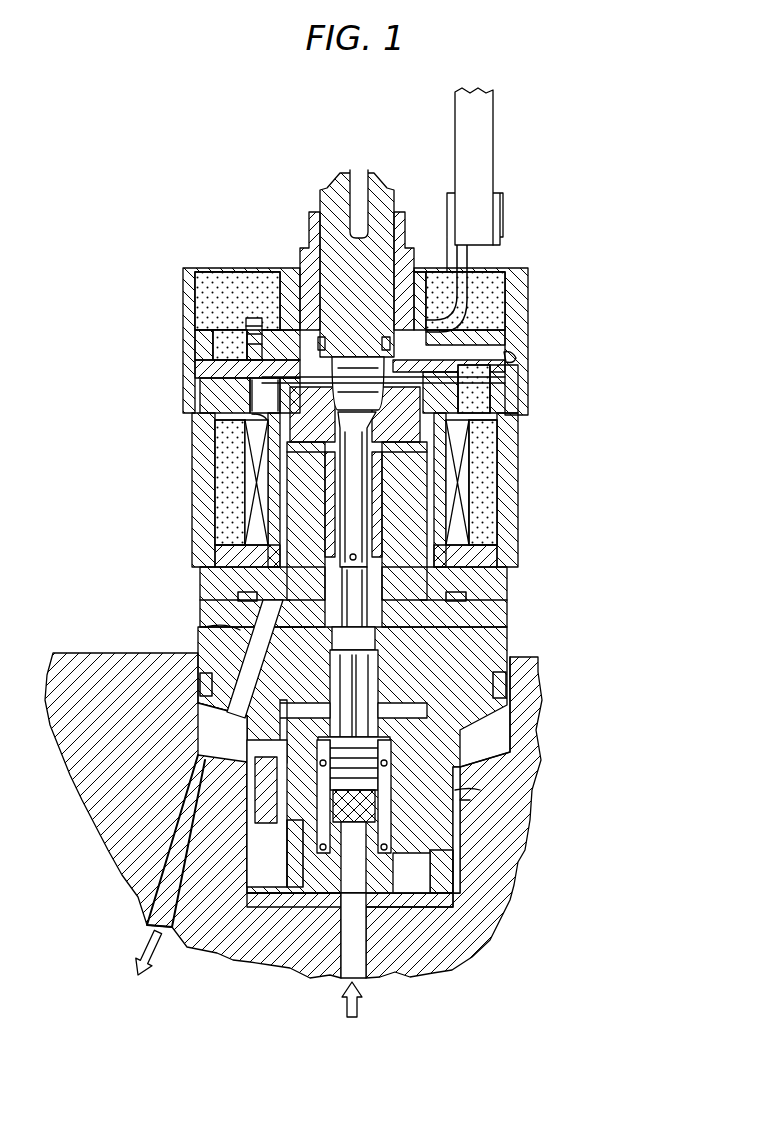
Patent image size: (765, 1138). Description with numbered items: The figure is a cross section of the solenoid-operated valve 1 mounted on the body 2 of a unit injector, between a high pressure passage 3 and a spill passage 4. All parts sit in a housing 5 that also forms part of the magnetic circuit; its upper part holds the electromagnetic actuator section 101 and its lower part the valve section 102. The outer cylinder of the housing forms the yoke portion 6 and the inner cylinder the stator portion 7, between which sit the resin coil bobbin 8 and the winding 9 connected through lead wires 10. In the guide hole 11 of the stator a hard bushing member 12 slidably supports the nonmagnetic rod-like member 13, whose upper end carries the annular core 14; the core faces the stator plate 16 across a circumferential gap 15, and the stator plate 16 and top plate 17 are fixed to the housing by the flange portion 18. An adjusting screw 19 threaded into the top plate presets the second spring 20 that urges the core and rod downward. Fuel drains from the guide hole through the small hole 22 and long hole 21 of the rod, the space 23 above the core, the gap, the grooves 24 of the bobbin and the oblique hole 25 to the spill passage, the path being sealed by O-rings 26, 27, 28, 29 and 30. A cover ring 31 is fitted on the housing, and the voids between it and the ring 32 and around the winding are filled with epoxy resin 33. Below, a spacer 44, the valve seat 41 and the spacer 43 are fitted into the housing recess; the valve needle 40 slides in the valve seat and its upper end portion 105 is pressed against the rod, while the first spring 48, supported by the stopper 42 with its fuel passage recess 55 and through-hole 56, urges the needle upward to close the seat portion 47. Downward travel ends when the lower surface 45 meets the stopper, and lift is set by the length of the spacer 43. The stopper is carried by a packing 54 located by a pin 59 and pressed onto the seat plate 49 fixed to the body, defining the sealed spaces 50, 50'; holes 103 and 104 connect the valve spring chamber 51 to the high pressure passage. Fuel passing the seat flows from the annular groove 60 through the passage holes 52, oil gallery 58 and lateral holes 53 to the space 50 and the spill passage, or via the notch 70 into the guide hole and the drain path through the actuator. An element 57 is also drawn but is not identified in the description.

The solenoid-operated valve 1 is at (178, 250).
The body 2 is at (490, 918).
The high pressure passage 3 is at (368, 975).
The spill passage 4 is at (162, 906).
The housing 5 is at (485, 608).
The yoke portion 6 is at (512, 484).
The stator portion 7 is at (300, 526).
The coil bobbin 8 is at (476, 580).
The winding 9 is at (455, 456).
The lead wires 10 is at (484, 152).
The guide hole 11 is at (236, 585).
The bushing member 12 is at (410, 512).
The rod-like member 13 is at (440, 631).
The core 14 is at (500, 422).
The circumferential space 15 is at (206, 433).
The stator plate 16 is at (215, 398).
The top plate 17 is at (200, 370).
The flange portion 18 is at (197, 340).
The adjusting screw 19 is at (327, 196).
The compression spring 20 is at (528, 328).
The long hole 21 is at (262, 495).
The small hole 22 is at (235, 548).
The space 23 is at (508, 360).
The grooves 24 is at (225, 470).
The oblique hole 25 is at (222, 625).
The O-ring 26 is at (255, 300).
The O-ring 27 is at (490, 380).
The O-ring 28 is at (500, 407).
The O-ring 29 is at (470, 592).
The O-ring 30 is at (538, 690).
The cover ring 31 is at (183, 290).
The ring 32 is at (292, 280).
The epoxy resin 33 is at (503, 268).
The valve needle 40 is at (458, 750).
The valve seat 41 is at (538, 713).
The stopper 42 is at (440, 820).
The spacer 43 is at (420, 862).
The spacer 44 is at (510, 645).
The lower surface 45 is at (230, 800).
The seat portion 47 is at (470, 724).
The compression valve spring 48 is at (430, 846).
The annular seat plate 49 is at (270, 935).
The space 50 is at (115, 735).
The space 50' is at (503, 897).
The valve spring chamber 51 is at (468, 801).
The passage holes 52 is at (200, 660).
The lateral holes 53 is at (190, 775).
The packing 54 is at (447, 968).
The fuel passage recess 55 is at (290, 905).
The through-hole 56 is at (230, 826).
The passage 57 is at (470, 790).
The oil gallery 58 is at (248, 735).
The pin 59 is at (240, 955).
The annular groove 60 is at (205, 645).
The notch 70 is at (538, 668).
The electromagnetic actuator section 101 is at (583, 358).
The valve section 102 is at (596, 761).
The hole 103 is at (318, 905).
The hole 104 is at (405, 907).
The upper end portion 105 is at (265, 602).